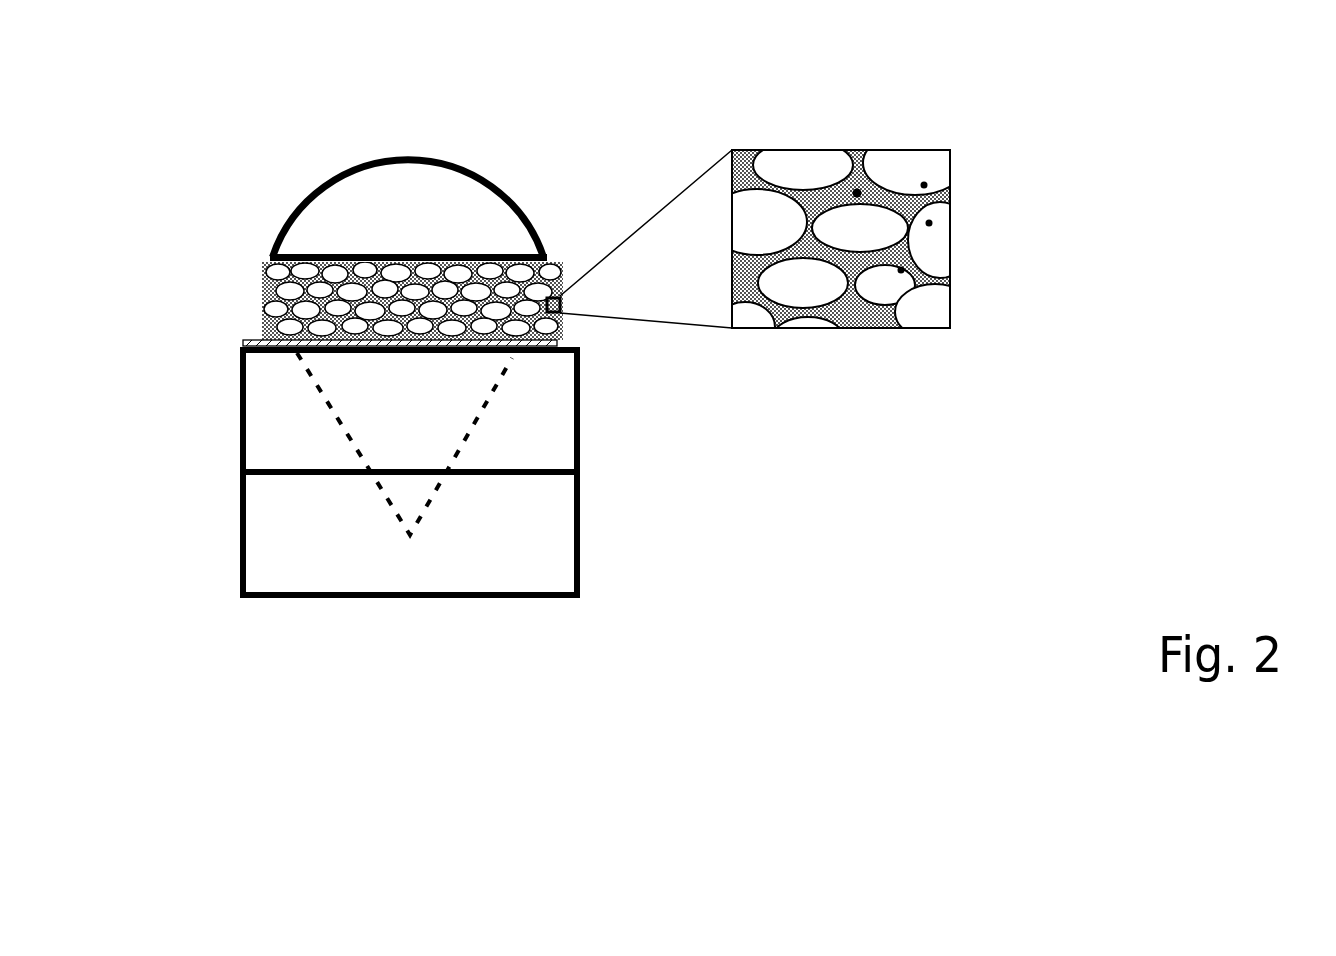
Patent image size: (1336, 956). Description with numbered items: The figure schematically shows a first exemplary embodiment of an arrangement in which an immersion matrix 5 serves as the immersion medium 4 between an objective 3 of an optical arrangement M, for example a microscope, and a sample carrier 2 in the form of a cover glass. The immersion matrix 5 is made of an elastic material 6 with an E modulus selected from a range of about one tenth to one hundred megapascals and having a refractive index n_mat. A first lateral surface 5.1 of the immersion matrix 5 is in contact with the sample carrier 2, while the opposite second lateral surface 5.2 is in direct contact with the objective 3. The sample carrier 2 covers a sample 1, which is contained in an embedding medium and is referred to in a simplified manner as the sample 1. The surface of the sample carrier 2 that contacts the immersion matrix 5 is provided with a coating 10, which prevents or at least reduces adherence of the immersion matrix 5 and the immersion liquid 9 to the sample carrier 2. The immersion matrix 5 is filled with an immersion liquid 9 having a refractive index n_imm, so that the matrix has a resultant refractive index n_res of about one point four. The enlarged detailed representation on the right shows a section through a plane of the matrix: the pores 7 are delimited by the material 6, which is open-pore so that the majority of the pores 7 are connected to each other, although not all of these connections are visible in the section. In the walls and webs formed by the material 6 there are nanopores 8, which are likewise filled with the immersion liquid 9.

The optical arrangement M is at (330, 96).
The sample 1 is at (240, 525).
The sample carrier 2 is at (240, 421).
The objective 3 is at (292, 216).
The immersion medium 4 is at (256, 298).
The immersion matrix 5 is at (793, 338).
The first lateral surface 5.1 is at (544, 345).
The second lateral surface 5.2 is at (556, 265).
The elastic material 6 is at (857, 193).
The pores 7 is at (935, 276).
The nanopores 8 is at (881, 290).
The immersion liquid 9 is at (901, 270).
The coating 10 is at (243, 341).